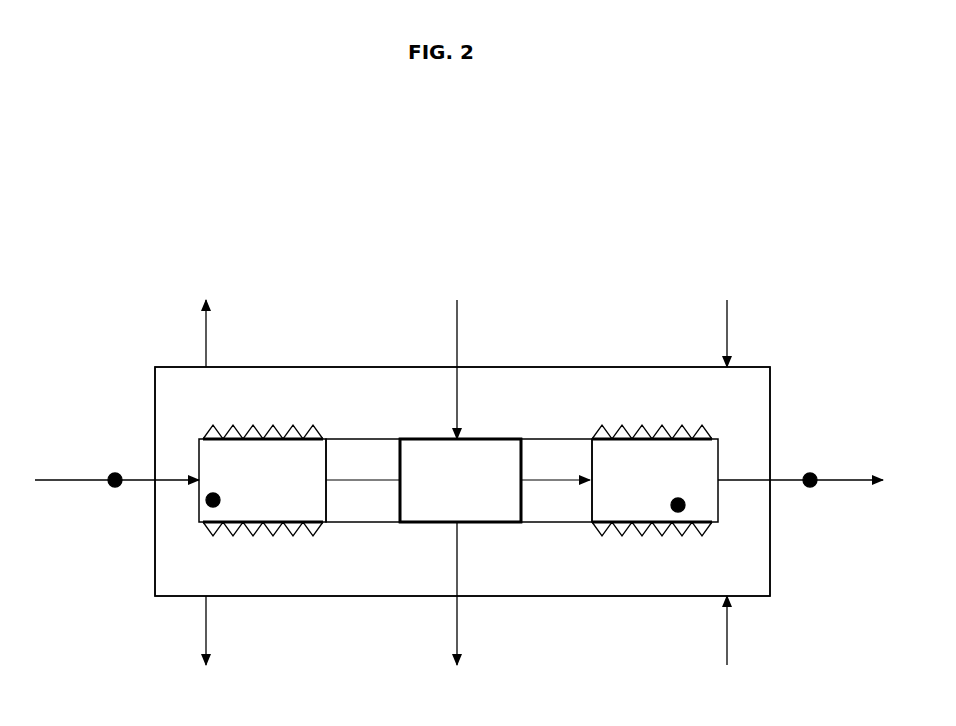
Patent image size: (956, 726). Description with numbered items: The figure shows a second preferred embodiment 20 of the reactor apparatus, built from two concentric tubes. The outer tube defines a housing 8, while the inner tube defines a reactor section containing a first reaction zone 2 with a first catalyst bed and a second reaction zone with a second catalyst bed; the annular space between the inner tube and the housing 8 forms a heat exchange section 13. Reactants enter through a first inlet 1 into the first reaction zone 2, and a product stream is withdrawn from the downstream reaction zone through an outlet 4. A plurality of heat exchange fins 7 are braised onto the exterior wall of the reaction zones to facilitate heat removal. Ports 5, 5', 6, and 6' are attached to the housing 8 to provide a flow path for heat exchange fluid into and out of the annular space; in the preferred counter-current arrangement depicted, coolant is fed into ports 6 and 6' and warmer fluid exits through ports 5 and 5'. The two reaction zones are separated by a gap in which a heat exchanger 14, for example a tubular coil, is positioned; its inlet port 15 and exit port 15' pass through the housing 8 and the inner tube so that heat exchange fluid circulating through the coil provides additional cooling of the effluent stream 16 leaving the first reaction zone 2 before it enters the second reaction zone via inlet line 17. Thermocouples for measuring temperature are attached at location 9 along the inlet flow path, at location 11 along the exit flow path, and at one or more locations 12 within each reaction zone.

The first inlet 1 is at (80, 479).
The first reaction zone 2 is at (262, 480).
The outlet 4 is at (852, 480).
The port 5 is at (179, 326).
The port 5' is at (179, 632).
The port 6 is at (753, 326).
The port 6' is at (753, 639).
The heat exchange fins 7 is at (294, 425).
The housing 8 is at (594, 367).
The location 9 is at (110, 488).
The location 11 is at (808, 488).
The locations 12 is at (212, 507).
The heat exchange section 13 is at (460, 451).
The heat exchanger 14 is at (460, 480).
The inlet port 15 is at (428, 362).
The exit port 15' is at (489, 602).
The effluent stream 16 is at (373, 480).
The inlet line 17 is at (562, 482).
The embodiment 20 is at (285, 247).